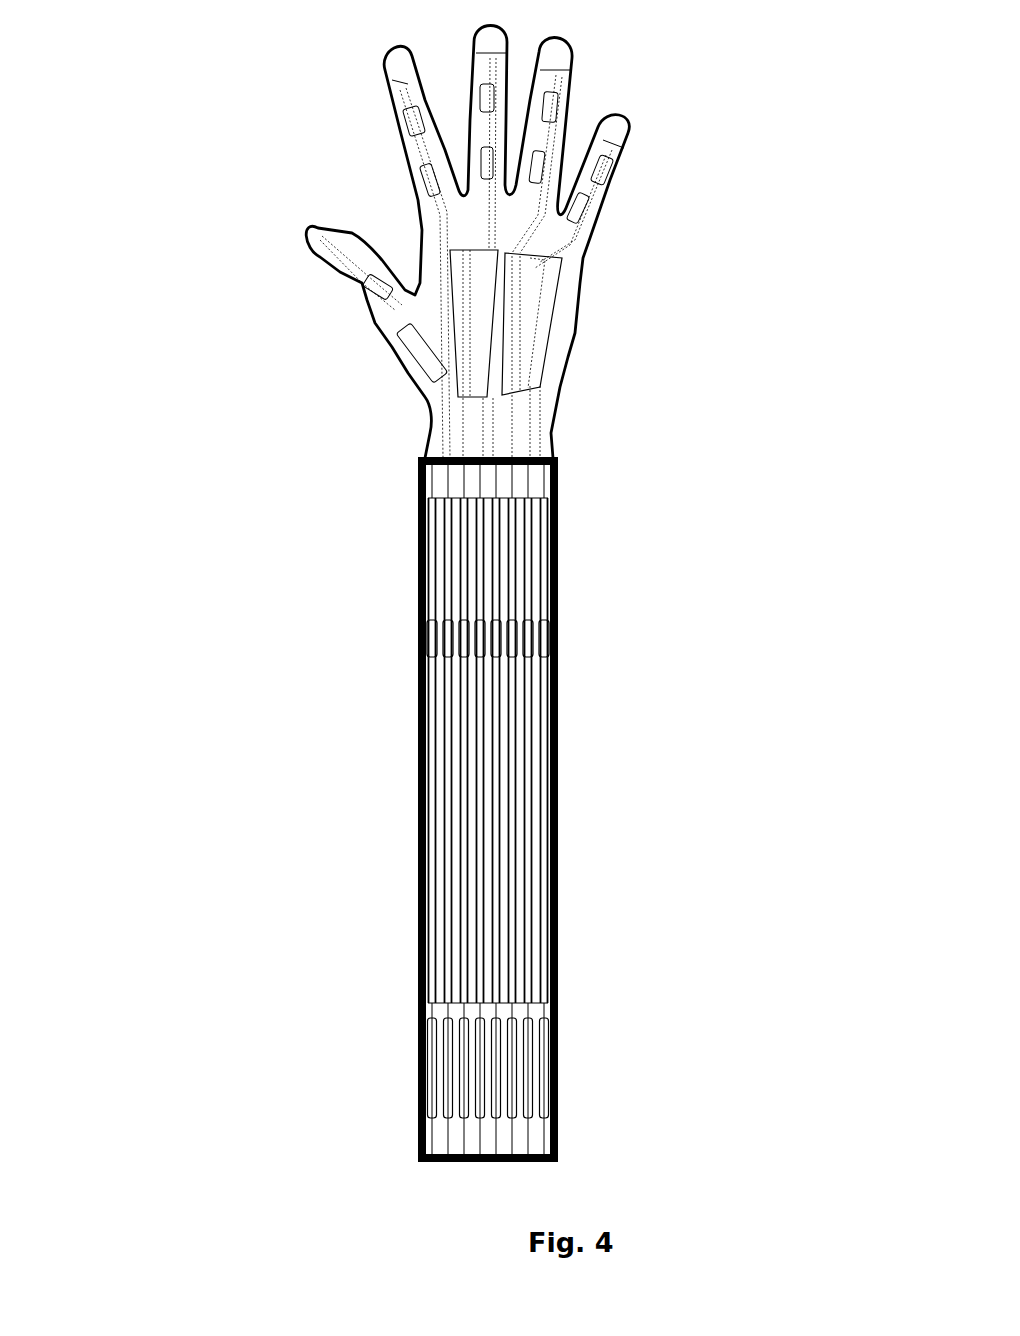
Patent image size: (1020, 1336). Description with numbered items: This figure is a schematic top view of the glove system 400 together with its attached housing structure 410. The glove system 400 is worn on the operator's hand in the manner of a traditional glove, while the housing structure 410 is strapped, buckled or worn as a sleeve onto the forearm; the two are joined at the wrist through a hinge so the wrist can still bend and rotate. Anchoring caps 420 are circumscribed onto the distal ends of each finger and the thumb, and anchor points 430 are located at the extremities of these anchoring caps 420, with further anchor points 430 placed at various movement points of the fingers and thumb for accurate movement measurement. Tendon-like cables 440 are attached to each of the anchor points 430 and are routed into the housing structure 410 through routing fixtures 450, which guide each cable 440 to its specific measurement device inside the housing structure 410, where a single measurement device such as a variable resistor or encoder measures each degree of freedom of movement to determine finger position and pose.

The glove system 400 is at (588, 562).
The housing structure 410 is at (558, 675).
The anchoring caps 420 is at (628, 133).
The anchor points 430 is at (362, 282).
The tendon-like cables 440 is at (438, 430).
The routing fixtures 450 is at (523, 388).